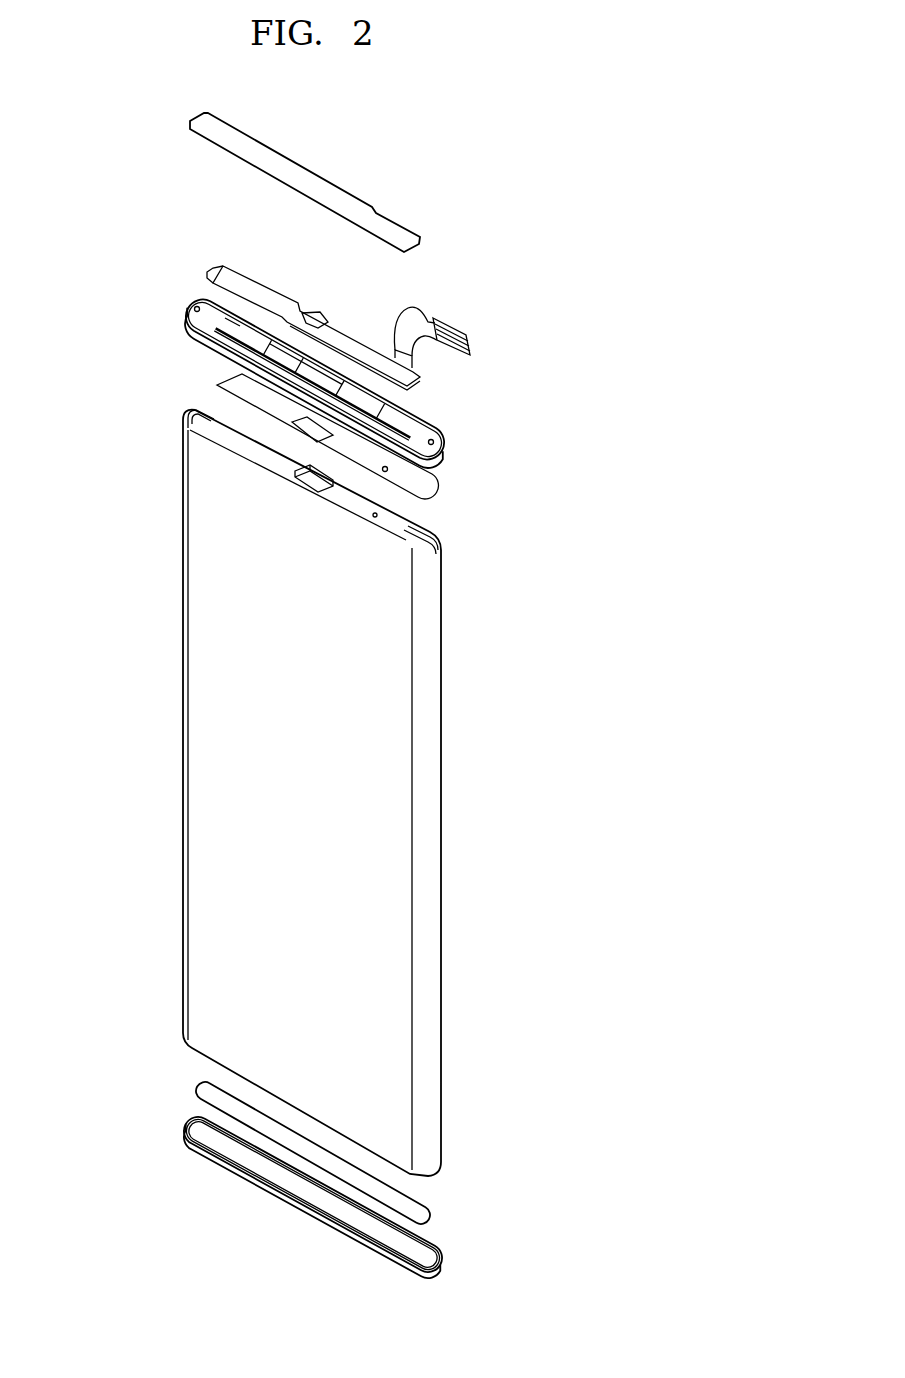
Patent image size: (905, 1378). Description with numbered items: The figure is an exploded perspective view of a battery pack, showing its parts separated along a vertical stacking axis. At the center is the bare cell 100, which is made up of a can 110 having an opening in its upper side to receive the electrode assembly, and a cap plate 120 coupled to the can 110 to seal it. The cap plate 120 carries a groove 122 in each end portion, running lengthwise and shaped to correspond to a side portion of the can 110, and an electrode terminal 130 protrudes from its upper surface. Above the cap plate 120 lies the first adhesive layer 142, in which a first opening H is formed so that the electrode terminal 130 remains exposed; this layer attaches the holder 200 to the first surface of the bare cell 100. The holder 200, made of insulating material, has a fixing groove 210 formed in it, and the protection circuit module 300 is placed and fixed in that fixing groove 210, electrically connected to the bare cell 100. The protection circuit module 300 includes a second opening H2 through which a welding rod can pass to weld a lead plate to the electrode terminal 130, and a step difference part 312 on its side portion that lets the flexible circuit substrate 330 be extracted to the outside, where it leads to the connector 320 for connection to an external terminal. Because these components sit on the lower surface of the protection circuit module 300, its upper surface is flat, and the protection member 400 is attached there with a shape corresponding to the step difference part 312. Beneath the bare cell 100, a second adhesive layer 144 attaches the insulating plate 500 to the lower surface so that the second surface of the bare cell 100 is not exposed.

The bare cell 100 is at (308, 769).
The can 110 is at (432, 841).
The cap plate 120 is at (315, 490).
The groove 122 is at (185, 408).
The electrode terminal 130 is at (310, 477).
The first adhesive layer 142 is at (373, 462).
The second adhesive layer 144 is at (318, 1157).
The holder 200 is at (353, 361).
The fixing groove 210 is at (205, 310).
The protection circuit module 300 is at (313, 302).
The step difference part 312 is at (392, 348).
The connector 320 is at (468, 332).
The flexible circuit substrate 330 is at (410, 317).
The protection member 400 is at (297, 160).
The insulating plate 500 is at (213, 1157).
The first opening H is at (307, 428).
The second opening H2 is at (313, 317).